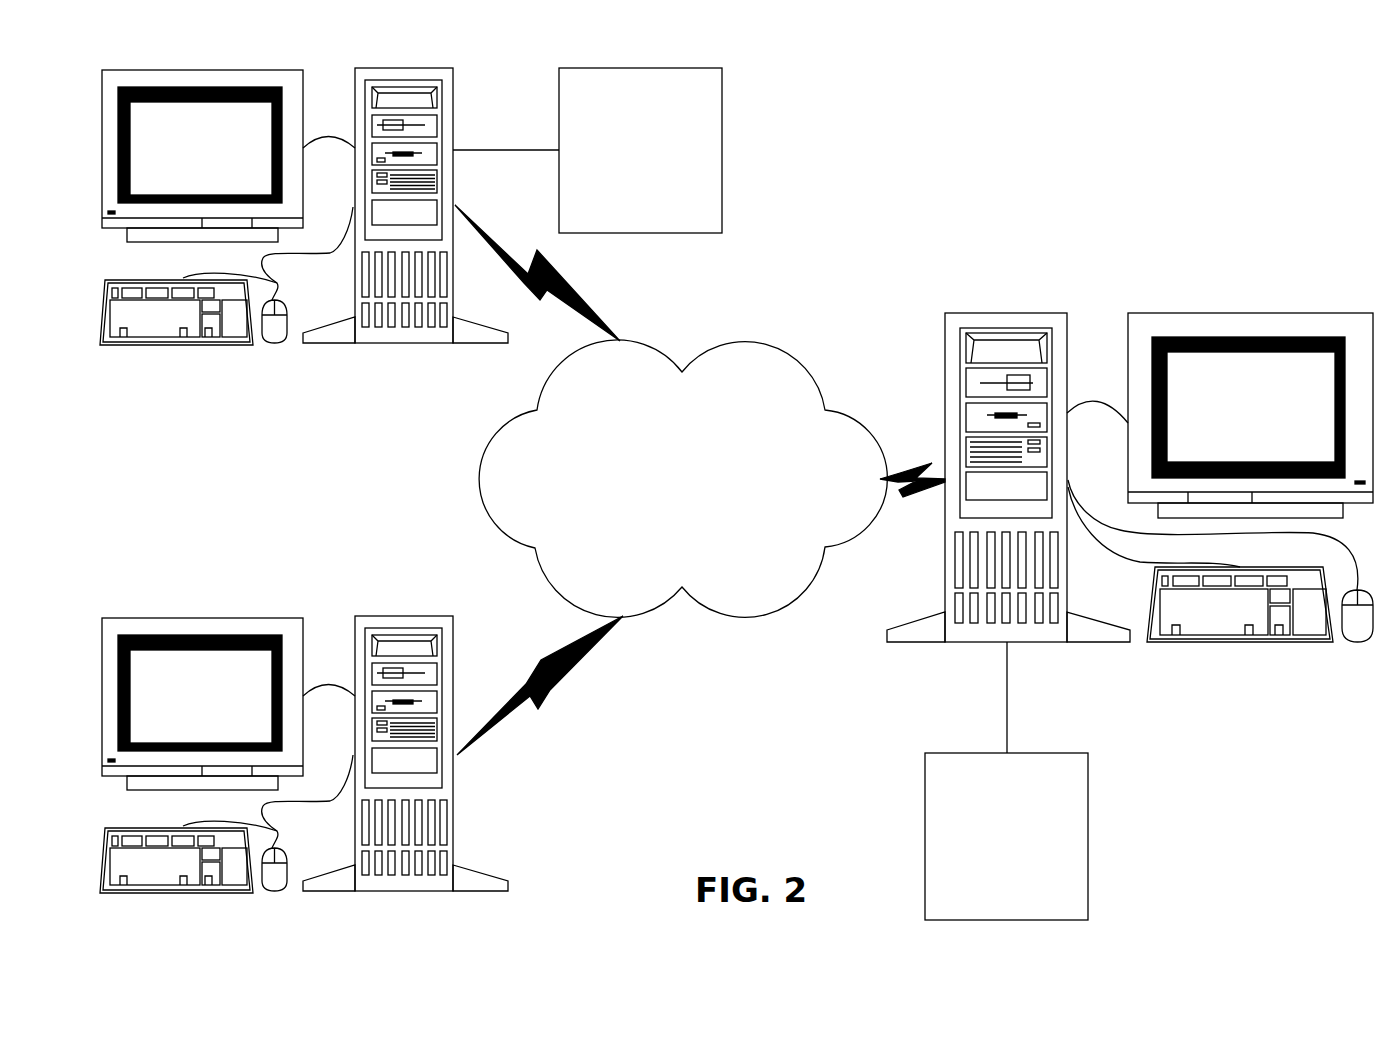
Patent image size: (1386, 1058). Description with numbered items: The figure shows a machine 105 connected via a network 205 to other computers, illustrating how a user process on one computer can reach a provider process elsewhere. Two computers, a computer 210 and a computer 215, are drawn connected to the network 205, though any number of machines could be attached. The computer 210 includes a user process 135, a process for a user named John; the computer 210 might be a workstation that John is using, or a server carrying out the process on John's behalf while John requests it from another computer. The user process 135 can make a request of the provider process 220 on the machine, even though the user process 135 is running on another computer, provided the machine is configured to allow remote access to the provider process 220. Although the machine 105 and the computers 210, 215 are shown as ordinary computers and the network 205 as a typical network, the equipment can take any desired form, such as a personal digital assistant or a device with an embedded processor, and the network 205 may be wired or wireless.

The machine 105 is at (822, 276).
The user process 135 is at (603, 68).
The network 205 is at (747, 341).
The computer 210 is at (398, 432).
The computer 215 is at (209, 556).
The provider process 220 is at (970, 753).